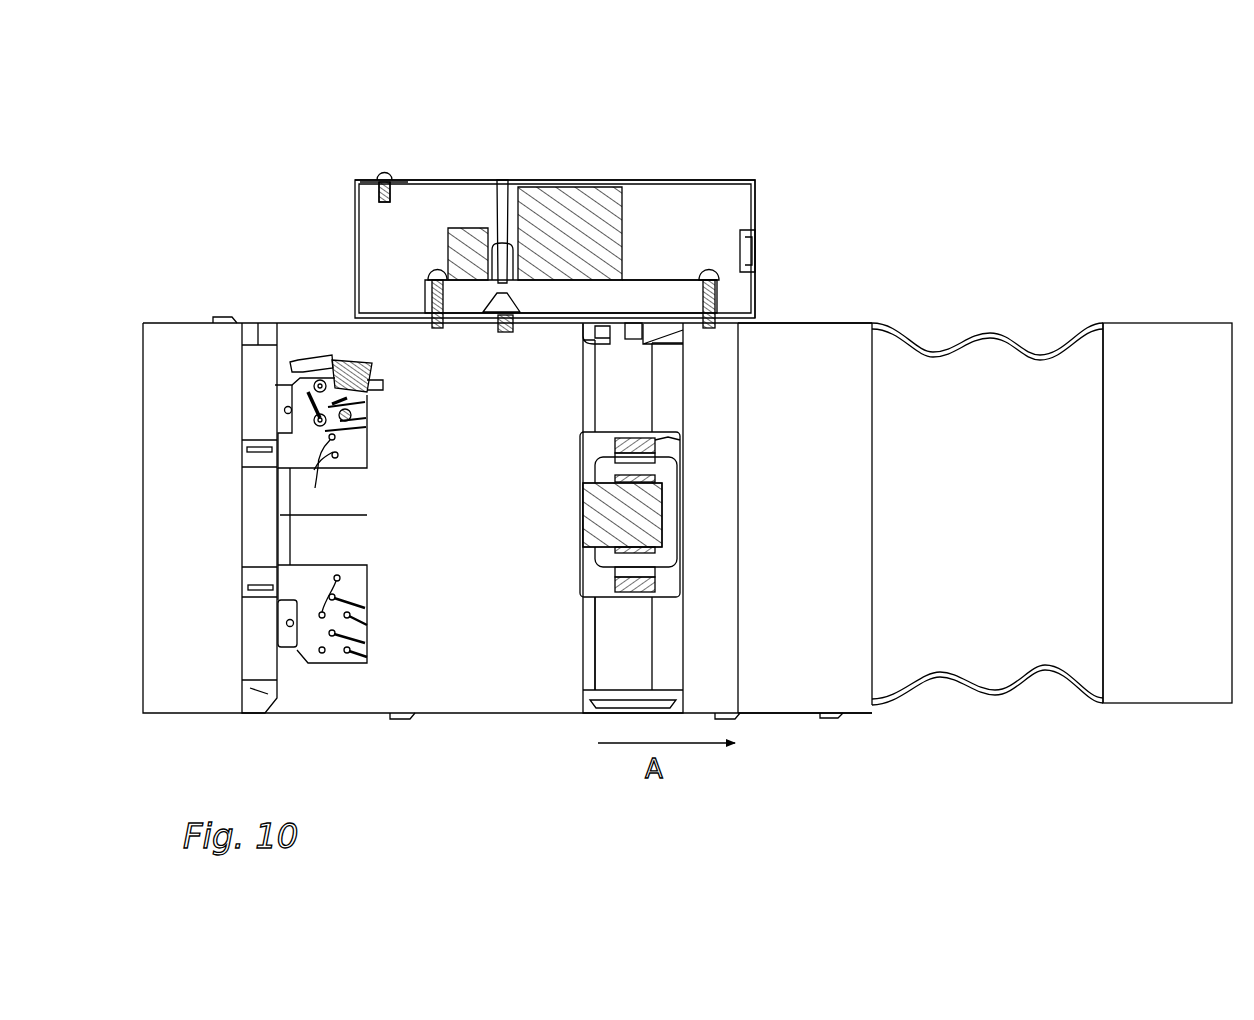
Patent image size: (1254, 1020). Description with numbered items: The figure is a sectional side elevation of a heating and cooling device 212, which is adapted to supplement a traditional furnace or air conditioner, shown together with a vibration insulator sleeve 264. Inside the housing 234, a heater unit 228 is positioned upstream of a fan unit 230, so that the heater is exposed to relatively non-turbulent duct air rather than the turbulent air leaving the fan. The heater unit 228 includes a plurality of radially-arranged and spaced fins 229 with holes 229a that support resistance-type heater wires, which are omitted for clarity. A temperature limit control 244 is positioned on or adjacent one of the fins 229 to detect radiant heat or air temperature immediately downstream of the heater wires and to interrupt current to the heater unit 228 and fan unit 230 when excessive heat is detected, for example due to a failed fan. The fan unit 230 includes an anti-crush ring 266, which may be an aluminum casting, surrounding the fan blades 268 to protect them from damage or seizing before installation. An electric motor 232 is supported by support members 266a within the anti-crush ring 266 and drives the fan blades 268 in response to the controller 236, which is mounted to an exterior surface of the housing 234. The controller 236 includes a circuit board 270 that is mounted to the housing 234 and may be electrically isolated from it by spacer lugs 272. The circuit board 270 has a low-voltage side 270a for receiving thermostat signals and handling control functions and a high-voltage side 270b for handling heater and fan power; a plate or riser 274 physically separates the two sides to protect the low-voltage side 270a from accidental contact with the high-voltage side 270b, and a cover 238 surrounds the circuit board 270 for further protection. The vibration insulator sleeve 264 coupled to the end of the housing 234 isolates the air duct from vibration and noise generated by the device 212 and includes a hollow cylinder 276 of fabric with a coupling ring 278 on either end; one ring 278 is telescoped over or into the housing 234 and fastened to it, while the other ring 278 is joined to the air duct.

The heating and cooling device 212 is at (178, 100).
The heater unit 228 is at (342, 694).
The fins 229 is at (367, 460).
The holes 229a is at (314, 470).
The fan unit 230 is at (523, 580).
The electric motor 232 is at (598, 522).
The housing 234 is at (528, 713).
The controller 236 is at (807, 183).
The cover 238 is at (753, 180).
The temperature limit control 244 is at (382, 367).
The vibration insulator sleeve 264 is at (1048, 224).
The anti-crush ring 266 is at (590, 695).
The support members 266a is at (597, 640).
The fan blades 268 is at (673, 397).
The circuit board 270 is at (652, 277).
The low-voltage side 270a is at (683, 255).
The high-voltage side 270b is at (448, 197).
The spacer lugs 272 is at (430, 290).
The riser 274 is at (484, 192).
The hollow cylinder 276 is at (986, 705).
The coupling ring 278 is at (846, 713).